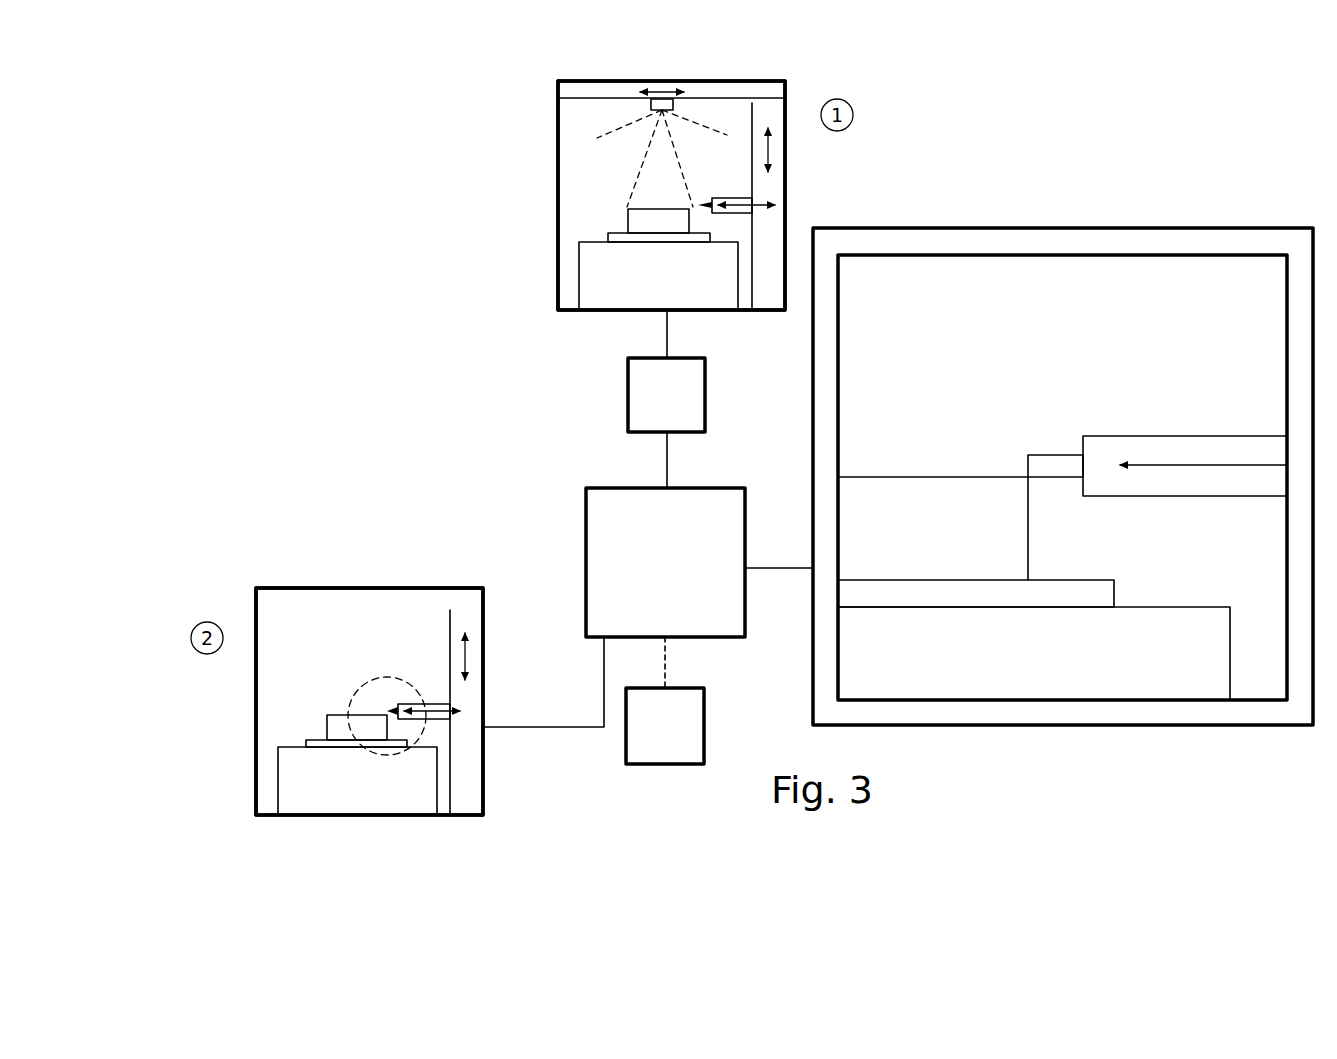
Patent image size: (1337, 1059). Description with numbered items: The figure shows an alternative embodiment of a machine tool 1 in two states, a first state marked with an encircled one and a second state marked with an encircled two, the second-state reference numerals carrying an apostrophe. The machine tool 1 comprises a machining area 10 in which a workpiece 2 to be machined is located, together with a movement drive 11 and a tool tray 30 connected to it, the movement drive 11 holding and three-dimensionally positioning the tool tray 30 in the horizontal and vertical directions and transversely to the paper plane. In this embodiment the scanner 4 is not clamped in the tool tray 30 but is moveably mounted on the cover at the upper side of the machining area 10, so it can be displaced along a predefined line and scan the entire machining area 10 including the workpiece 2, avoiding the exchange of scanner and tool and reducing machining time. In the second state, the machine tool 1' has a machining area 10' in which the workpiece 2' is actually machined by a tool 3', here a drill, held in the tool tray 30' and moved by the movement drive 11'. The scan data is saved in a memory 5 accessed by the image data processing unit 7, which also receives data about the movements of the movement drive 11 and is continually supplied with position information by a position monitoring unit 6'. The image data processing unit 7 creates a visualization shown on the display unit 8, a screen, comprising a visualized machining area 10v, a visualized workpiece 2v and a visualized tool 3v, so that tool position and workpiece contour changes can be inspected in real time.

The machine tool 1 is at (573, 195).
The machining area 10 is at (628, 195).
The movement drive 11 is at (769, 230).
The scanner 4 is at (640, 100).
The workpiece 2 is at (616, 259).
The tool tray 30 is at (777, 192).
The memory 5 is at (652, 400).
The image data processing unit 7 is at (620, 548).
The position monitoring unit 6' is at (627, 751).
The machine tool in the second state 1' is at (359, 652).
The machining area in the second state 10' is at (321, 701).
The movement drive in the second state 11' is at (499, 712).
The workpiece in the second state 2' is at (316, 765).
The tool 3' is at (387, 639).
The tool tray in the second state 30' is at (429, 627).
The display unit 8 is at (1222, 183).
The visualized machining area 10v is at (995, 275).
The visualized tool 3v is at (1060, 452).
The visualized workpiece 2v is at (989, 518).